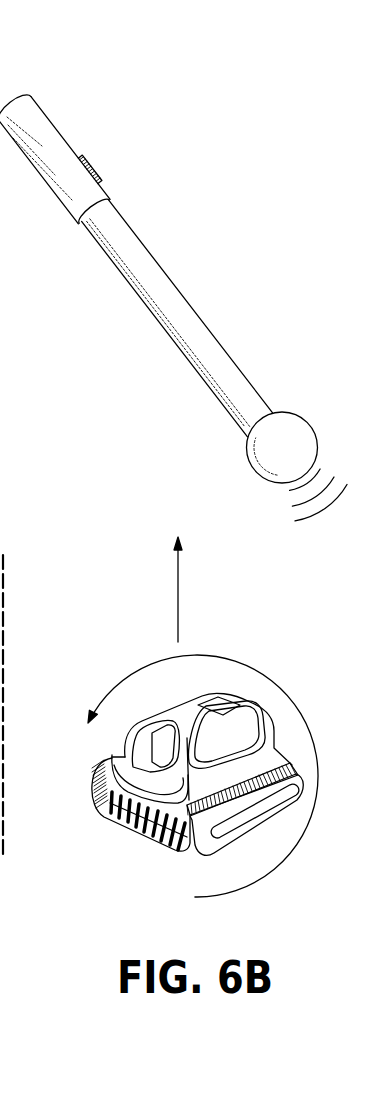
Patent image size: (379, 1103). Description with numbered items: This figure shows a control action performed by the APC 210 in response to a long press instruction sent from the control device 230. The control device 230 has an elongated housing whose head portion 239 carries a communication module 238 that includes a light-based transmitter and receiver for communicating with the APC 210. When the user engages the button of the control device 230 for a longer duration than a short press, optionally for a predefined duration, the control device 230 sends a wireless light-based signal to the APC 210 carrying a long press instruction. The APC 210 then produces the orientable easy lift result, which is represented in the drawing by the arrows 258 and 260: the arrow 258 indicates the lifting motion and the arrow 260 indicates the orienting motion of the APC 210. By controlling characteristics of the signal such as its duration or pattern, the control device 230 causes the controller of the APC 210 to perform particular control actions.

The APC 210 is at (112, 825).
The control device 230 is at (165, 295).
The communication module 238 is at (265, 447).
The head portion 239 is at (297, 433).
The arrow 258 is at (178, 605).
The arrow 260 is at (308, 727).